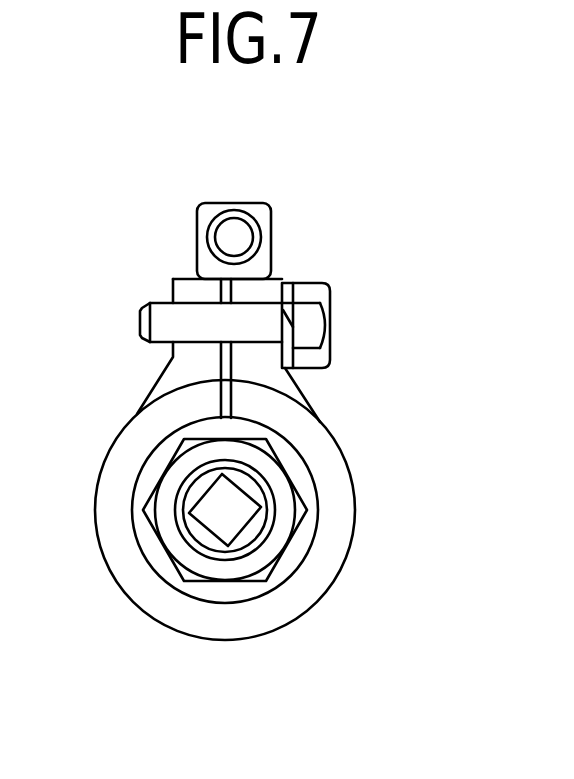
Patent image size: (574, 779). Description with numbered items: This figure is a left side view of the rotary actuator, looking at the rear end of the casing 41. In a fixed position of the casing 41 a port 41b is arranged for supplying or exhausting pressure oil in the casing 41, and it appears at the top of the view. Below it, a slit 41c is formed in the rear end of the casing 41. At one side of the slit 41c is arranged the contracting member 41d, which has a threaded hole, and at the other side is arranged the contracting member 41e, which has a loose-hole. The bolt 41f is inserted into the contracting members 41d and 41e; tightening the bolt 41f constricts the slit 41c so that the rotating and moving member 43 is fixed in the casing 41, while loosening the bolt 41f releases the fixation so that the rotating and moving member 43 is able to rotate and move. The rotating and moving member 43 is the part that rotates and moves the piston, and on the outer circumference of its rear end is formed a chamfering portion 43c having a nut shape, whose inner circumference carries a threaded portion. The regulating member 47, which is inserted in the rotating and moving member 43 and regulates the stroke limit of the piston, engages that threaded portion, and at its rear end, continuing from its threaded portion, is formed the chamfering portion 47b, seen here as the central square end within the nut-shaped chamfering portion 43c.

The casing 41 is at (340, 523).
The port 41b is at (262, 204).
The slit 41c is at (231, 398).
The contracting member 41d is at (177, 289).
The contracting member 41e is at (268, 289).
The bolt 41f is at (322, 295).
The rotating and moving member 43 is at (300, 475).
The chamfering portion 43c is at (297, 518).
The regulating member 47 is at (247, 543).
The chamfering portion 47b is at (209, 518).